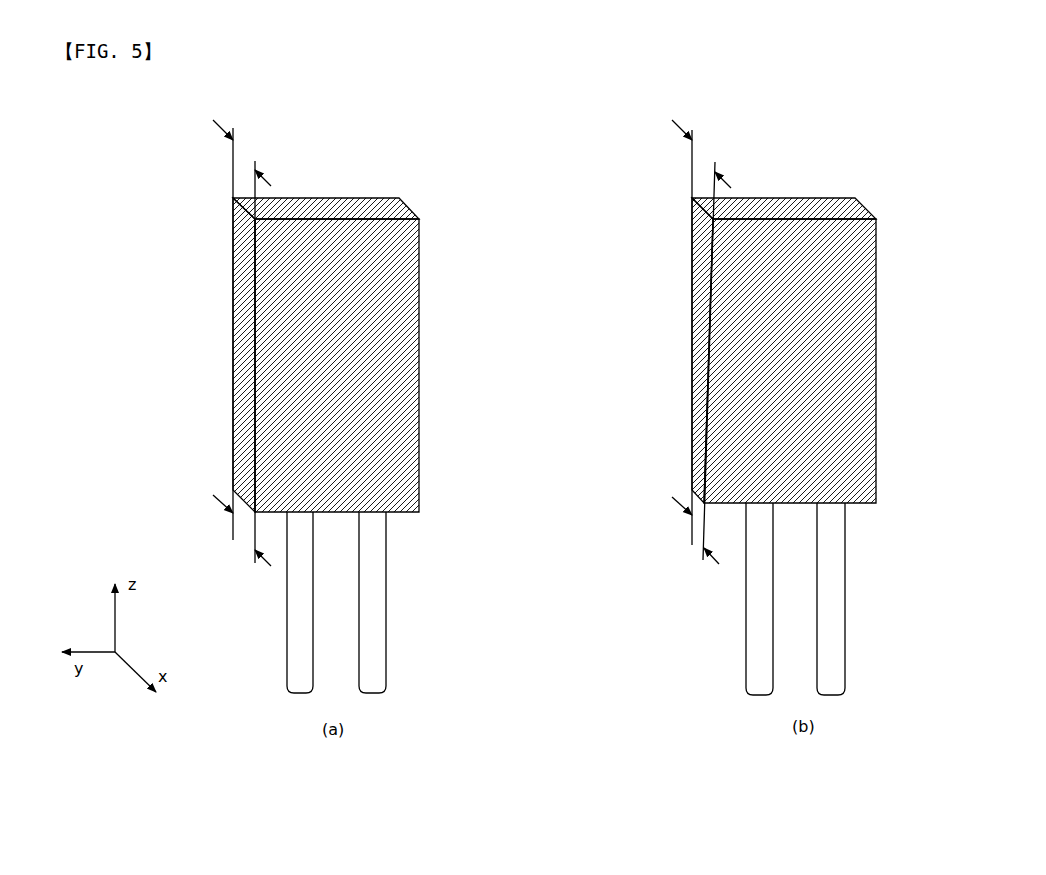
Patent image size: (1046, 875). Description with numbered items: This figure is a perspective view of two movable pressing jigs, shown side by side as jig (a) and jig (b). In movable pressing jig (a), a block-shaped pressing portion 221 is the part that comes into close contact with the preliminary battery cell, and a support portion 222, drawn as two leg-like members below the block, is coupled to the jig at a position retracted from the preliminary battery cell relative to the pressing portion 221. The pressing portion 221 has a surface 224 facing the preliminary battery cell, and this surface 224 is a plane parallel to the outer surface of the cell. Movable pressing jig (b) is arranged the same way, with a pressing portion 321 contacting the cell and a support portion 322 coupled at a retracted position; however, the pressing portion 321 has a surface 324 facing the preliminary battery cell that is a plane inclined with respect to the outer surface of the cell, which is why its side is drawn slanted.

The pressing portion 221 is at (240, 340).
The support portion 222 is at (287, 630).
The surface 224 is at (395, 397).
The pressing portion 321 is at (695, 328).
The support portion 322 is at (746, 625).
The surface 324 is at (852, 398).